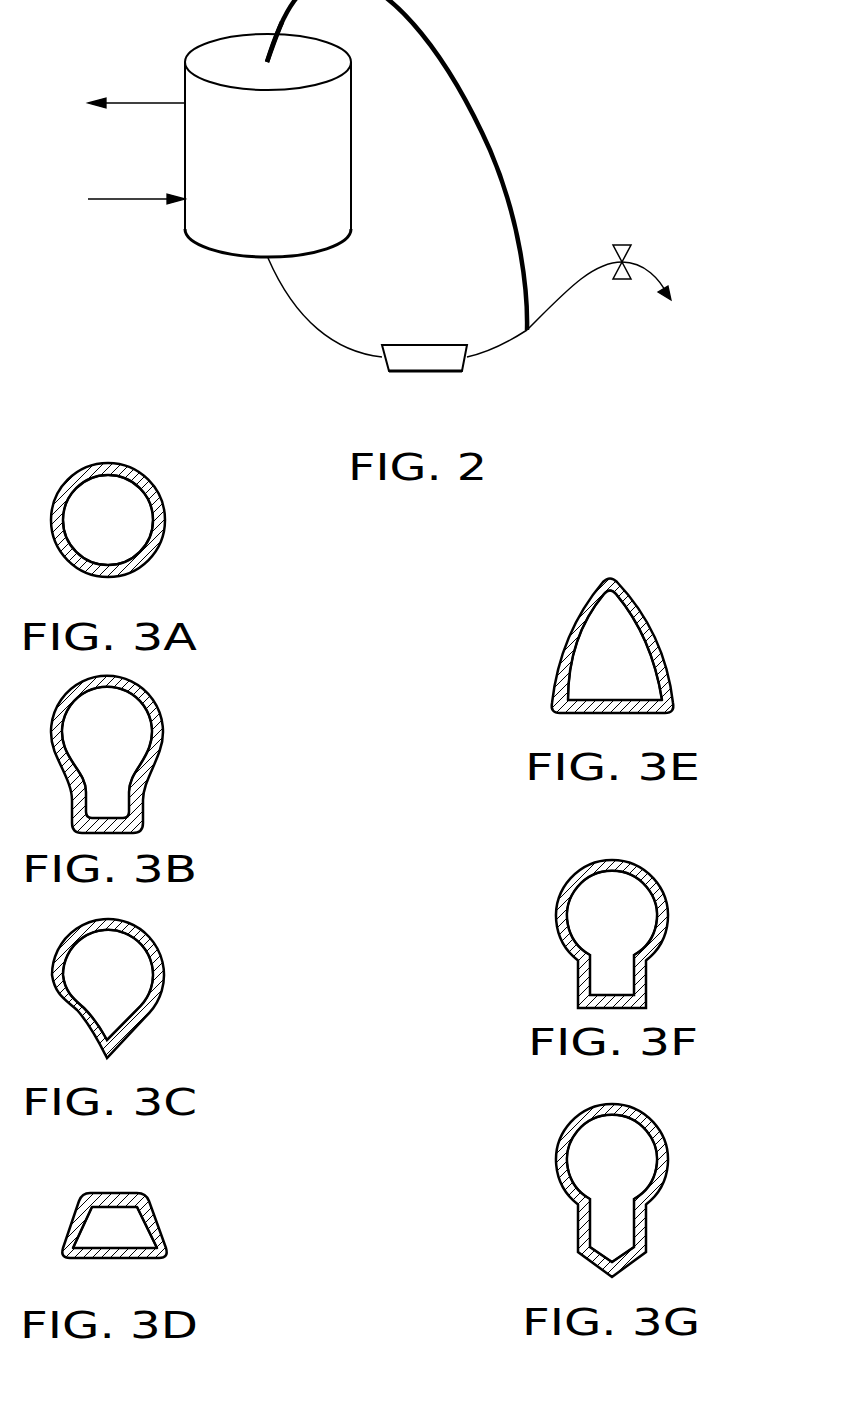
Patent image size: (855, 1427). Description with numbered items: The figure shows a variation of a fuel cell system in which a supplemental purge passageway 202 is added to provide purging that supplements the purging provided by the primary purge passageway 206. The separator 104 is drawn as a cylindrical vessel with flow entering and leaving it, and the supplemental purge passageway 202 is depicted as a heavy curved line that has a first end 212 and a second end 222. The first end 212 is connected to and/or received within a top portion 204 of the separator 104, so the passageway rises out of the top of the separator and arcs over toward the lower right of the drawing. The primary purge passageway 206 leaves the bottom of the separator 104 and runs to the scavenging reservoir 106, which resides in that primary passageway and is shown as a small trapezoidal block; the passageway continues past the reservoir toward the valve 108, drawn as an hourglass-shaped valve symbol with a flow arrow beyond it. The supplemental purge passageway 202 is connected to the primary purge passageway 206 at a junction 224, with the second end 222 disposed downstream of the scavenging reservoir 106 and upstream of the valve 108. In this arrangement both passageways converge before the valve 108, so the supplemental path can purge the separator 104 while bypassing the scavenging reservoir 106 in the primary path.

The separator 104 is at (292, 174).
The scavenging reservoir 106 is at (414, 386).
The valve 108 is at (622, 245).
The supplemental purge passageway 202 is at (477, 127).
The top portion 204 is at (246, 52).
The primary purge passageway 206 is at (308, 317).
The first end 212 is at (268, 60).
The second end 222 is at (537, 341).
The junction 224 is at (522, 330).